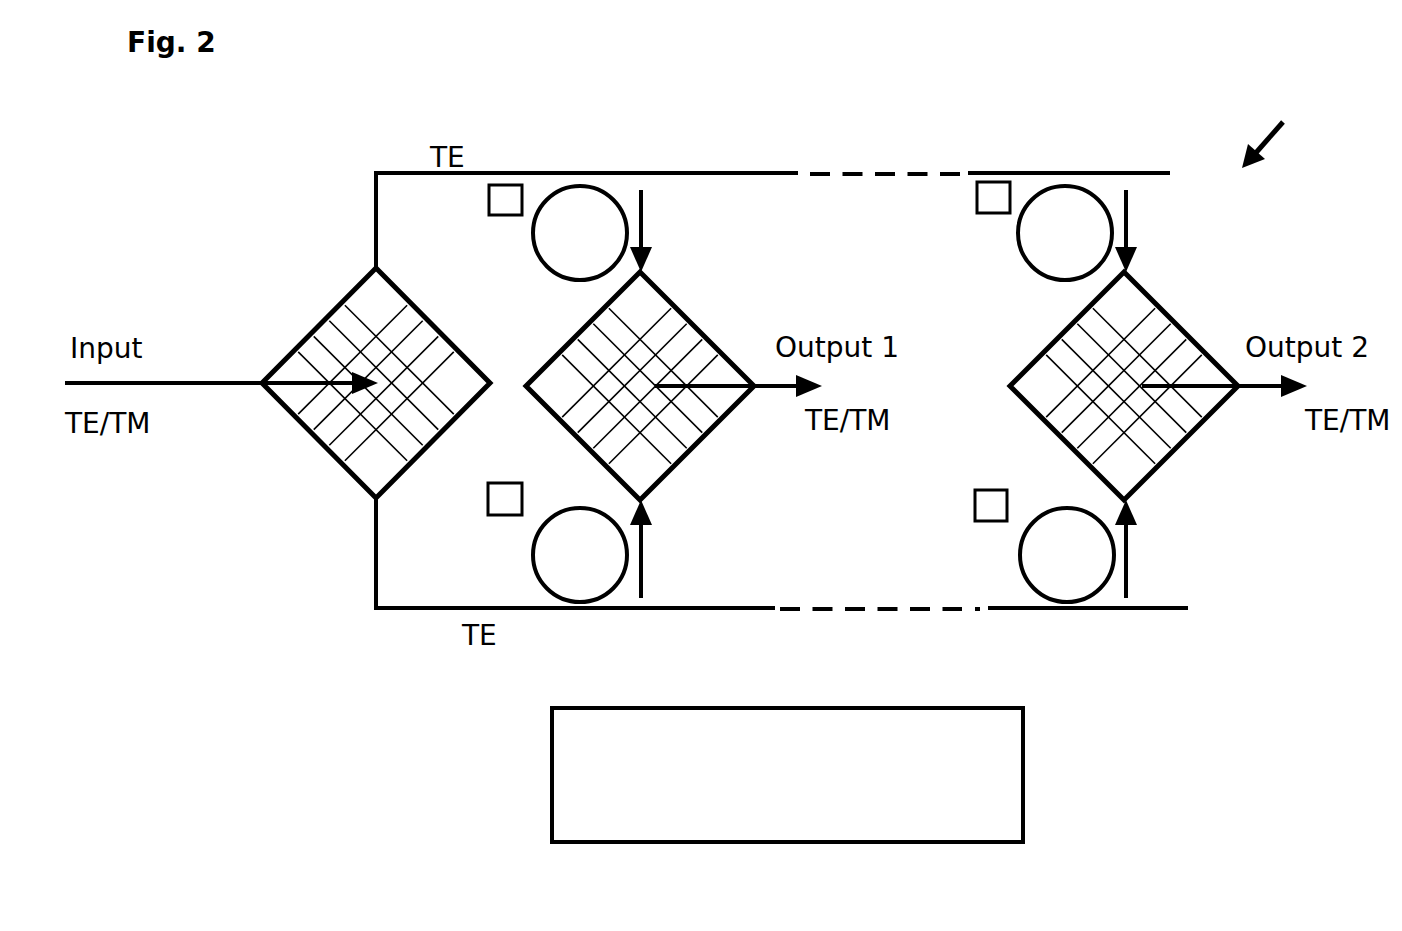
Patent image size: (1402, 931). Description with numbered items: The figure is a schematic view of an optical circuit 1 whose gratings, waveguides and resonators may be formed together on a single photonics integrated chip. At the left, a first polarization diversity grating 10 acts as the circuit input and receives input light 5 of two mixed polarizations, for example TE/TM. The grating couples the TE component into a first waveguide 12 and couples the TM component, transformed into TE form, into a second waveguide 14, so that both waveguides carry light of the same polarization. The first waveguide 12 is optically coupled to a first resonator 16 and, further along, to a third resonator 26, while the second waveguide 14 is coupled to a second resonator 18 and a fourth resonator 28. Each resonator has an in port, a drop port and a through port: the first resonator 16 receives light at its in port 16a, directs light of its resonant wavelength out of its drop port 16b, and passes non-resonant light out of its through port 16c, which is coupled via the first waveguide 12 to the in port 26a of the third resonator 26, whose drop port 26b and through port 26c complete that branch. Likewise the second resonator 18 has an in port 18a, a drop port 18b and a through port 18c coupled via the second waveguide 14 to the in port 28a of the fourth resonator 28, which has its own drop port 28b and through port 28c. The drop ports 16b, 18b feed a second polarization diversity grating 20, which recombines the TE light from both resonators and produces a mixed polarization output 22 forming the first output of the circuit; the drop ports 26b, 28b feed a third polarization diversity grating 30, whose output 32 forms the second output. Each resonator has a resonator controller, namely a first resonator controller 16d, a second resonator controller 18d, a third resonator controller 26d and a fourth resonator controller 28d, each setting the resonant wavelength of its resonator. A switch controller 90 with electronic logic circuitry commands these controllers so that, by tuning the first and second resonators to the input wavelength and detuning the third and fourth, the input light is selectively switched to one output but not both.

The optical circuit 1 is at (1278, 138).
The input light 5 is at (188, 385).
The first polarization diversity grating 10 is at (340, 298).
The first waveguide 12 is at (372, 212).
The second waveguide 14 is at (376, 572).
The first resonator 16 is at (580, 233).
The in port 16a is at (552, 173).
The drop port 16b is at (645, 217).
The through port 16c is at (607, 173).
The first resonator controller 16d is at (488, 200).
The second resonator 18 is at (580, 555).
The in port 18a is at (555, 607).
The drop port 18b is at (650, 555).
The through port 18c is at (620, 610).
The second resonator controller 18d is at (487, 502).
The second polarization diversity grating 20 is at (553, 358).
The output 22 is at (780, 397).
The third resonator 26 is at (1065, 233).
The in port 26a is at (1038, 173).
The drop port 26b is at (1130, 227).
The through port 26c is at (1085, 173).
The third resonator controller 26d is at (976, 204).
The fourth resonator 28 is at (1067, 555).
The in port 28a is at (1035, 610).
The drop port 28b is at (1130, 563).
The through port 28c is at (1093, 610).
The fourth resonator controller 28d is at (974, 503).
The third polarization diversity grating 30 is at (1040, 362).
The output 32 is at (1267, 397).
The switch controller 90 is at (787, 775).